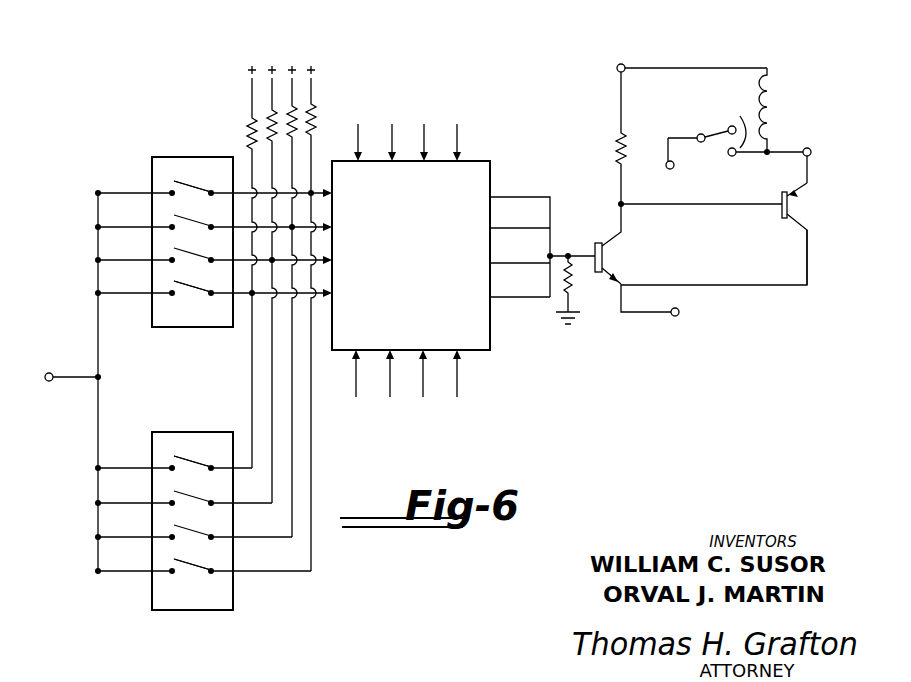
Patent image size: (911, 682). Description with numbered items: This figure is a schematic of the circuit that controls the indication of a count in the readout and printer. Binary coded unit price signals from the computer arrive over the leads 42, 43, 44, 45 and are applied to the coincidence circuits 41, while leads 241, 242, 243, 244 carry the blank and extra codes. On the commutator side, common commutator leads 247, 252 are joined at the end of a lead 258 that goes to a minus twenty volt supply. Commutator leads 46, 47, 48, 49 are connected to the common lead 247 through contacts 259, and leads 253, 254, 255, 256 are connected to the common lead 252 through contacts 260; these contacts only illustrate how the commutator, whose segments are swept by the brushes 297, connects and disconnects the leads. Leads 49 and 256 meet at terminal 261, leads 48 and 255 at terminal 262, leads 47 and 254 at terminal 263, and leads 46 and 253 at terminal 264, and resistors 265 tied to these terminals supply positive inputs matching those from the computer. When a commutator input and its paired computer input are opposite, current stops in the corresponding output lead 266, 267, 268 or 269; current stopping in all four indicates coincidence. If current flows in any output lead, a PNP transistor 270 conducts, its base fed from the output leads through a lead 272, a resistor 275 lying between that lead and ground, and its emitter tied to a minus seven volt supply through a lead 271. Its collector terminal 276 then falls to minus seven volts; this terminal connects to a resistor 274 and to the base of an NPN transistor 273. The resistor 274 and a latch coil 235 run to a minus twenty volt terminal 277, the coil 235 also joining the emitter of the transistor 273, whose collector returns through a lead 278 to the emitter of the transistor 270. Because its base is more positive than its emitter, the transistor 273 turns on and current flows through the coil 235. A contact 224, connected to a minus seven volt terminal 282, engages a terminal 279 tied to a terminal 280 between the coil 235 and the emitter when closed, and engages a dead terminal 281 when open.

The coincidence circuit 41 is at (411, 255).
The computer lead 42 is at (357, 149).
The computer lead 43 is at (392, 136).
The computer lead 44 is at (424, 136).
The computer lead 45 is at (459, 142).
The commutator lead 46 is at (239, 292).
The commutator lead 47 is at (239, 258).
The commutator lead 48 is at (239, 225).
The commutator lead 49 is at (239, 191).
The contact 224 is at (728, 120).
The latch coil 235 is at (778, 104).
The lead 241 is at (355, 379).
The lead 242 is at (390, 379).
The lead 243 is at (423, 379).
The lead 244 is at (459, 378).
The common commutator lead 247 is at (97, 243).
The common commutator lead 252 is at (97, 516).
The lead 253 is at (240, 467).
The lead 254 is at (246, 502).
The lead 255 is at (243, 536).
The lead 256 is at (245, 570).
The lead 258 is at (73, 383).
The contacts 259 is at (173, 185).
The contacts 260 is at (176, 459).
The terminal 261 is at (314, 191).
The terminal 262 is at (296, 225).
The terminal 263 is at (275, 262).
The terminal 264 is at (250, 297).
The resistors 265 is at (250, 124).
The output lead 266 is at (543, 196).
The output lead 267 is at (543, 227).
The output lead 268 is at (543, 262).
The output lead 269 is at (543, 296).
The PNP transistor 270 is at (606, 258).
The lead 271 is at (653, 316).
The lead 272 is at (558, 255).
The NPN transistor 273 is at (791, 208).
The resistor 274 is at (612, 159).
The resistor 275 is at (582, 312).
The terminal 276 is at (623, 207).
The terminal 277 is at (616, 73).
The lead 278 is at (788, 285).
The terminal 279 is at (736, 157).
The terminal 280 is at (811, 148).
The dead terminal 281 is at (728, 128).
The terminal 282 is at (666, 163).
The brushes 297 is at (178, 148).